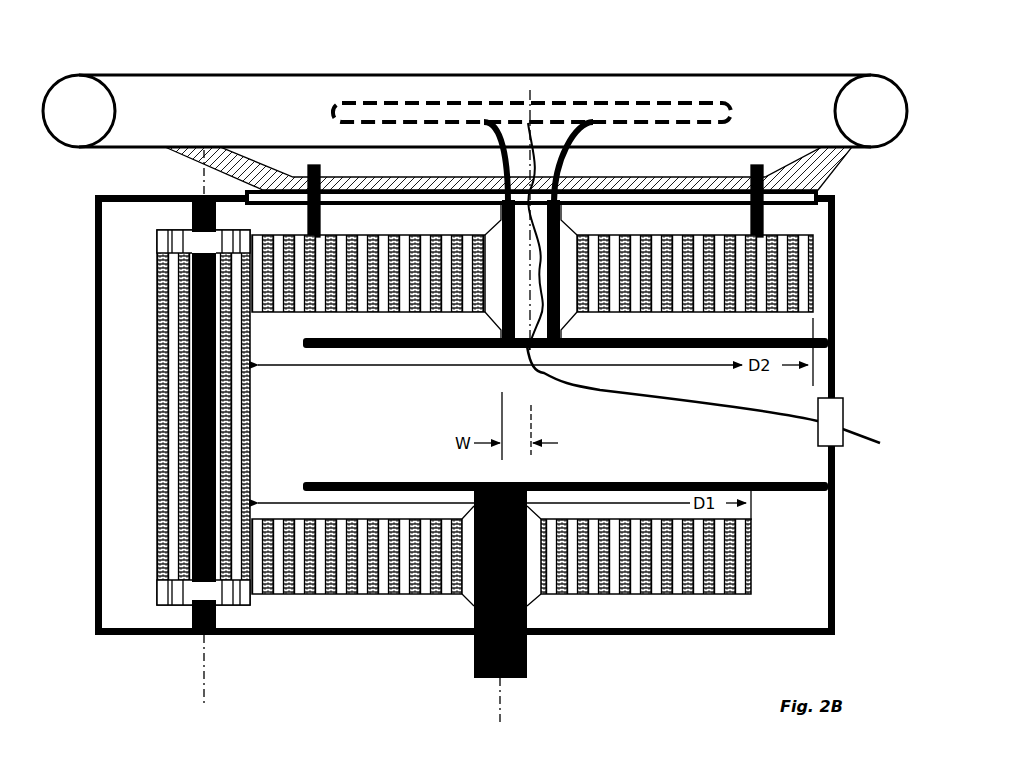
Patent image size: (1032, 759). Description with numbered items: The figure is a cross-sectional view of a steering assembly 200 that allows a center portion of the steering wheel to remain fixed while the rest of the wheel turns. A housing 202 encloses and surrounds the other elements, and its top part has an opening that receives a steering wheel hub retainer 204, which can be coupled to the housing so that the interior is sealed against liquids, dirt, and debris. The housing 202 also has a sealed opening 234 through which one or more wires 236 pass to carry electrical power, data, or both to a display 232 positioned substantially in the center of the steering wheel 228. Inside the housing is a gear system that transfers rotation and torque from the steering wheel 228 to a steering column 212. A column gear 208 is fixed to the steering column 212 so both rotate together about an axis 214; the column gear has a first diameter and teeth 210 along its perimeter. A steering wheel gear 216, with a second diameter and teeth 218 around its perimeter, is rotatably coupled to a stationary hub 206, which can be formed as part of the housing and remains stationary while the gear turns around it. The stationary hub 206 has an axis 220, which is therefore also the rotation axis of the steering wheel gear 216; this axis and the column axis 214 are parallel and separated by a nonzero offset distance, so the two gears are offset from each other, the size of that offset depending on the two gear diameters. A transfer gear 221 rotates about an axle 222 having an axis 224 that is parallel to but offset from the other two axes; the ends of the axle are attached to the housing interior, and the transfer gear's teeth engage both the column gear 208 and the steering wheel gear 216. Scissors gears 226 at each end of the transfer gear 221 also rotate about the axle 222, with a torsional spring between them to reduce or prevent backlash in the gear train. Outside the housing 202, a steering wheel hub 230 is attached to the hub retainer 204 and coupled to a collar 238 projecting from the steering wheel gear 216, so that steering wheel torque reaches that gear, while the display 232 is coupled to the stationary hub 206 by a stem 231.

The steering assembly 200 is at (86, 238).
The housing 202 is at (96, 438).
The steering wheel hub retainer 204 is at (806, 192).
The stationary hub 206 is at (563, 210).
The column gear 208 is at (424, 600).
The teeth 210 is at (630, 580).
The steering column 212 is at (528, 660).
The axis 214 is at (497, 701).
The steering wheel gear 216 is at (460, 228).
The teeth 218 is at (662, 234).
The axis 220 is at (530, 272).
The transfer gear 221 is at (150, 466).
The axle 222 is at (217, 613).
The axis 224 is at (201, 427).
The scissors gears 226 is at (161, 236).
The steering wheel 228 is at (192, 95).
The steering wheel hub 230 is at (476, 180).
The stem 231 is at (565, 160).
The display 232 is at (548, 104).
The sealed opening 234 is at (842, 402).
The wires 236 is at (866, 440).
The collar 238 is at (764, 216).